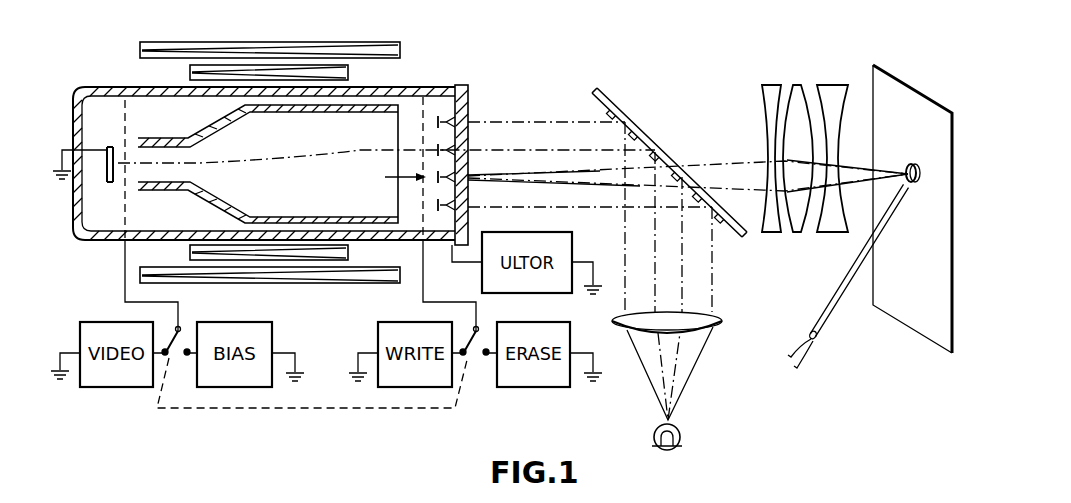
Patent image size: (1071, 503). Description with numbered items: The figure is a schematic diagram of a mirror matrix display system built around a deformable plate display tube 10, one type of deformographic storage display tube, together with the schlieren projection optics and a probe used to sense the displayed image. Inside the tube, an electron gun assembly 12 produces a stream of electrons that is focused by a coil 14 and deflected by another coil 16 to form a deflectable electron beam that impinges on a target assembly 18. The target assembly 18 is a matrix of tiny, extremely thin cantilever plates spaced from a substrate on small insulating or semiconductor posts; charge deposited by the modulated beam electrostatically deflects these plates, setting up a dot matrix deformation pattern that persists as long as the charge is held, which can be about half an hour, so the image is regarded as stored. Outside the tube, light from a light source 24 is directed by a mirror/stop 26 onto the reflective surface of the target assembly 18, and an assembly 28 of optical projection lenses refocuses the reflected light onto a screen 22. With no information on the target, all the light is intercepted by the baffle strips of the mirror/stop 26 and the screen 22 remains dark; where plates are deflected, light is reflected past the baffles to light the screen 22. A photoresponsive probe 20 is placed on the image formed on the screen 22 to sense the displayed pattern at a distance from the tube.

The deformable plate display tube 10 is at (116, 68).
The electron gun assembly 12 is at (163, 135).
The coil 14 is at (173, 49).
The coil 16 is at (190, 70).
The target assembly 18 is at (470, 80).
The probe 20 is at (914, 163).
The screen 22 is at (908, 92).
The light source 24 is at (680, 442).
The mirror/stop 26 is at (644, 117).
The assembly of optical projection lenses 28 is at (847, 80).